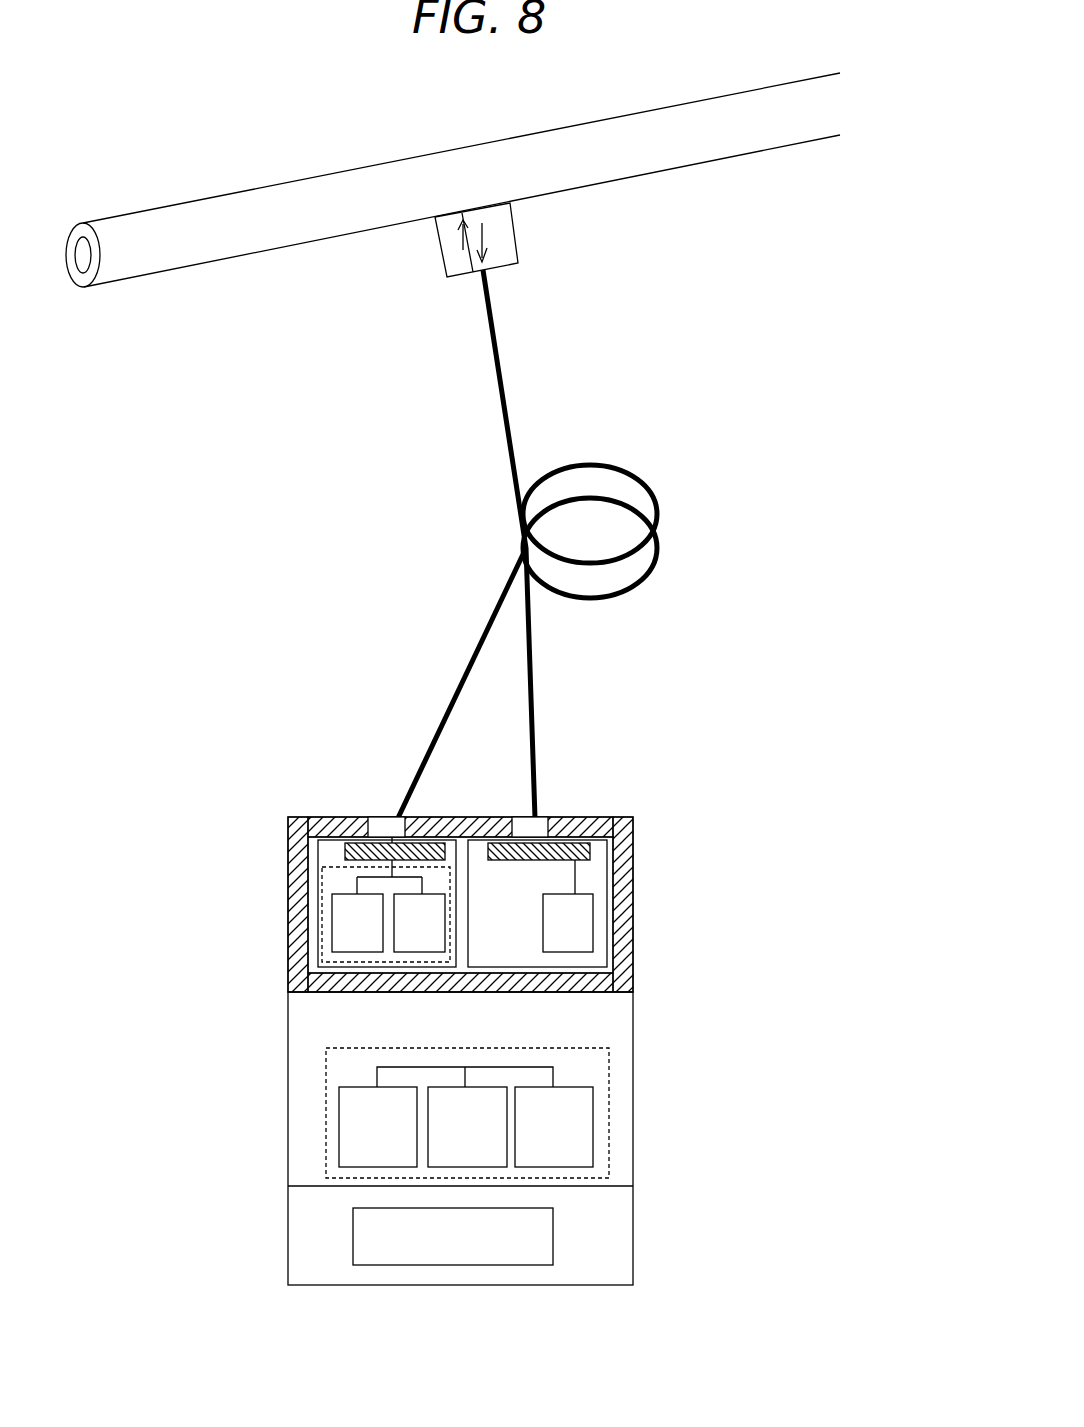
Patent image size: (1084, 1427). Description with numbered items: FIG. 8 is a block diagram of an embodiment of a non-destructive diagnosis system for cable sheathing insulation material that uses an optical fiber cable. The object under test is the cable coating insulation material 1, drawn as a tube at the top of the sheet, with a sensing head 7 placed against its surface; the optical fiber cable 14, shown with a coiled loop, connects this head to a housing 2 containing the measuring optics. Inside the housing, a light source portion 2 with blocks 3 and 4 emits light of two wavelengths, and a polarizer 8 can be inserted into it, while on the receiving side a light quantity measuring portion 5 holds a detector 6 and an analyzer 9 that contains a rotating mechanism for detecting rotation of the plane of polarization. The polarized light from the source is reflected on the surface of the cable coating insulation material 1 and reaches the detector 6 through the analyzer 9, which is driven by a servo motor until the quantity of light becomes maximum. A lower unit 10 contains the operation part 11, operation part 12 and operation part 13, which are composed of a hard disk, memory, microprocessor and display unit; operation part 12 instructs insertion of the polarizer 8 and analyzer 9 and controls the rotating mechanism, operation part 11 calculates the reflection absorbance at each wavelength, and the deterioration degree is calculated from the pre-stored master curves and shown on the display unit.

The cable coating insulation material 1 is at (318, 195).
The light source portion 2 is at (318, 882).
The signal generator 3 is at (357, 923).
The amplifier 4 is at (419, 923).
The light quantity measuring portion 5 is at (537, 903).
The detector 6 is at (568, 923).
The sensor 7 is at (515, 223).
The polarizer 8 is at (345, 849).
The analyzer 9 is at (590, 860).
The processing unit 10 is at (460, 1138).
The operation part 11 is at (378, 1127).
The operation part 12 is at (467, 1127).
The operation part 13 is at (554, 1127).
The cable 14 is at (518, 492).